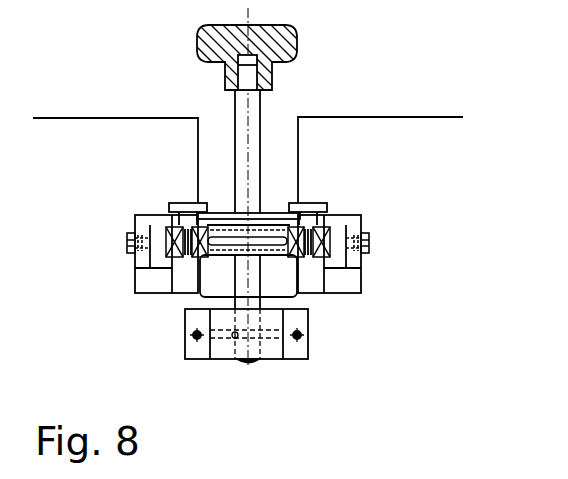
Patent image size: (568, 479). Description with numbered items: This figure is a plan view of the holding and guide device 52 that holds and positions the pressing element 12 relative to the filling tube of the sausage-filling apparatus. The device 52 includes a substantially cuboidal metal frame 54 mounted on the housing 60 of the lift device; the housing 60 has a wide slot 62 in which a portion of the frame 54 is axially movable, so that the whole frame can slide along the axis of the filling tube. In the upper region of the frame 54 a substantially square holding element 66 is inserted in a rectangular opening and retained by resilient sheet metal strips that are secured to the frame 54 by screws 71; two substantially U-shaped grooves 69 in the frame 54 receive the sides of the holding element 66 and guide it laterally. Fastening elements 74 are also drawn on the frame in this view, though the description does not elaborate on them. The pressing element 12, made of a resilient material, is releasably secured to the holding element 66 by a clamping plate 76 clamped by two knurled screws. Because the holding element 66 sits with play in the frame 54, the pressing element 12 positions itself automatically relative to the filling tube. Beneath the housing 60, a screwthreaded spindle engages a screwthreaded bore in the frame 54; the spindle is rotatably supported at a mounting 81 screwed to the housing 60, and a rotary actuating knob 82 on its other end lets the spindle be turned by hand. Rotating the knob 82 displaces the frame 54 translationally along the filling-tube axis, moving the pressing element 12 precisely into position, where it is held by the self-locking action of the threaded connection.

The rotary actuating knob 82 is at (287, 47).
The wide slot 62 is at (268, 132).
The housing 60 is at (248, 160).
The bolt 74 is at (168, 208).
The holding element 66 is at (135, 217).
The pressing element 12 is at (190, 257).
The clamping plate 76 is at (320, 285).
The screws 71 is at (127, 238).
The U-shaped grooves 69 is at (128, 253).
The metal frame 54 is at (350, 280).
The mounting 81 is at (185, 341).
The holding and guide device 52 is at (446, 326).